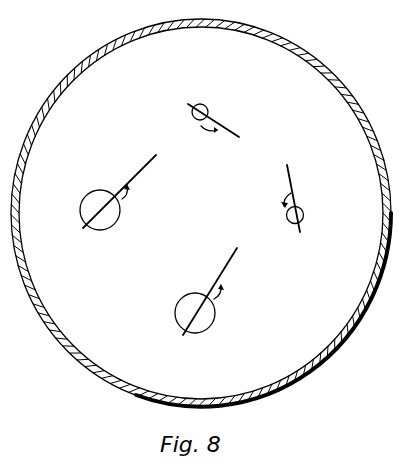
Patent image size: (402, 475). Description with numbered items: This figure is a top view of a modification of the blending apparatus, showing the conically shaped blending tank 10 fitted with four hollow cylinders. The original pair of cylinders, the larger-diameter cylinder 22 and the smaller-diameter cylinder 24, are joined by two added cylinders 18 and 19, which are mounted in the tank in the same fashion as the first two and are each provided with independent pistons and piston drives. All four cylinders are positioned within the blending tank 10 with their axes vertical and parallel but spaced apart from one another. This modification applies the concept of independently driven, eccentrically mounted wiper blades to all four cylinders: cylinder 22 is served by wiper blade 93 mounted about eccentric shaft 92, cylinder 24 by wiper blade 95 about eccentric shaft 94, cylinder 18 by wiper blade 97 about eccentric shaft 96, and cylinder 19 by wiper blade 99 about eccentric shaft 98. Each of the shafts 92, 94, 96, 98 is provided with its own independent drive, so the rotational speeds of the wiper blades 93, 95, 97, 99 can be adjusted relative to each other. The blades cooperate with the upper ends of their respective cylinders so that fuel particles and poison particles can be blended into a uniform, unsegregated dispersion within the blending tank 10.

The blending tank 10 is at (283, 43).
The cylinder 18 is at (214, 322).
The cylinder 19 is at (205, 104).
The hollow cylinder 22 is at (118, 225).
The hollow cylinder 24 is at (304, 218).
The eccentric shaft 92 is at (118, 194).
The wiper blade 93 is at (146, 167).
The eccentric shaft 94 is at (297, 195).
The wiper blade 95 is at (290, 172).
The eccentric shaft 96 is at (207, 292).
The wiper blade 97 is at (225, 263).
The eccentric shaft 98 is at (214, 121).
The wiper blade 99 is at (239, 137).